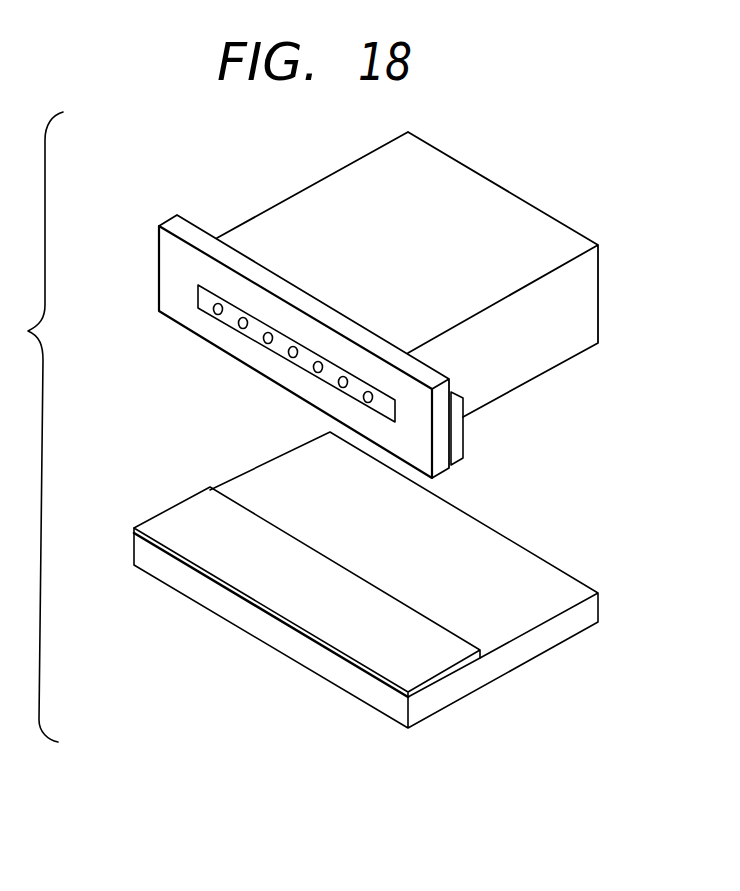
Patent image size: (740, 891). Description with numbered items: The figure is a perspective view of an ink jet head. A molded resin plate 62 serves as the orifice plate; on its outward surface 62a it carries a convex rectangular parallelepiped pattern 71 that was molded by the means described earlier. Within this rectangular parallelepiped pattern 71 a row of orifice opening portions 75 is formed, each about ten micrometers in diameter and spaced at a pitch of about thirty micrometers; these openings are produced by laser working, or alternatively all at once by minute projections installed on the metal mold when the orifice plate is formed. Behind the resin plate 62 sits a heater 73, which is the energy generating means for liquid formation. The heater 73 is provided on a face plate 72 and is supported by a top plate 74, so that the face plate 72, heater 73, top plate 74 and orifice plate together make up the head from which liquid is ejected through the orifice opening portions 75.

The top plate 74 is at (525, 213).
The heater 73 is at (463, 432).
The resin plate 62 is at (321, 363).
The front face of front panel 62a is at (175, 316).
The rectangular parallelepiped pattern 71 is at (303, 363).
The orifice opening portions 75 is at (238, 320).
The face plate 72 is at (505, 667).